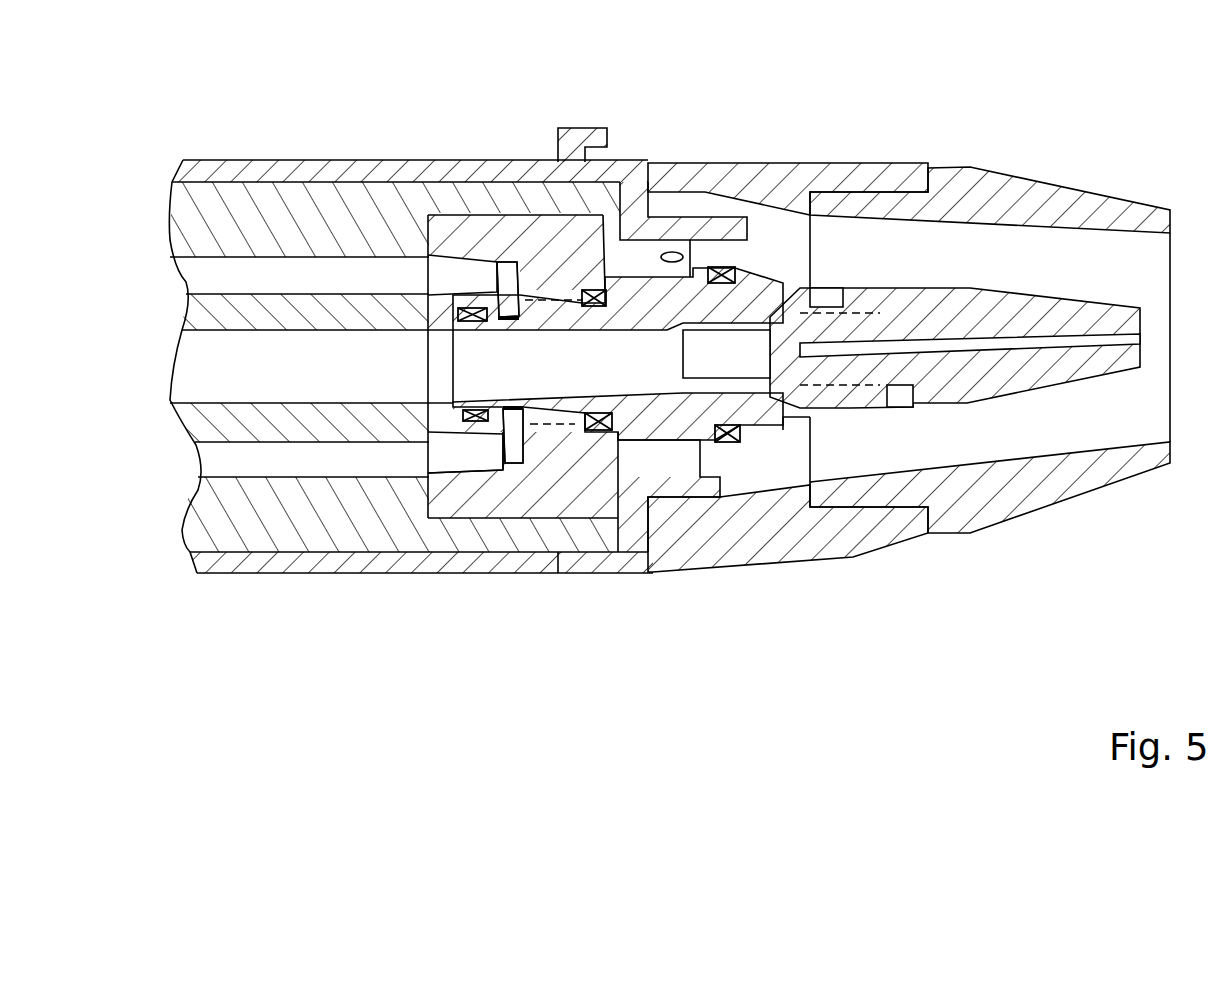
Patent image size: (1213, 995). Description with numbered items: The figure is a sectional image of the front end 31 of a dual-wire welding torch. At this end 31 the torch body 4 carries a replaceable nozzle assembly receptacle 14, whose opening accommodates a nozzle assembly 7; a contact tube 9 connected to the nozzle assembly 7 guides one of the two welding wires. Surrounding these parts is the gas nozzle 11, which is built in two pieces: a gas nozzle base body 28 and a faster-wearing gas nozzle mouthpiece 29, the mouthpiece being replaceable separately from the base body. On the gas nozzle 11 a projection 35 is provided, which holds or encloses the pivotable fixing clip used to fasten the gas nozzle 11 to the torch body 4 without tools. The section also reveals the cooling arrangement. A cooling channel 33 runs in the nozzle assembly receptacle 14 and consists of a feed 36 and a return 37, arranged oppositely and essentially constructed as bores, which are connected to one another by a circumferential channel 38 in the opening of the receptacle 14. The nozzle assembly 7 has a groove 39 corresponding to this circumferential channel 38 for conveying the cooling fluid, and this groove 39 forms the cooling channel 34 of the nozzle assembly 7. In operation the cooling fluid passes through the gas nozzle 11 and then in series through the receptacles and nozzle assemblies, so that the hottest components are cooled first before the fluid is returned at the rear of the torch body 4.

The torch body 4 is at (218, 218).
The nozzle assembly 7 is at (637, 305).
The contact tube 9 is at (1052, 313).
The gas nozzle 11 is at (1010, 568).
The nozzle assembly receptacle 14 is at (455, 242).
The gas nozzle base body 28 is at (733, 548).
The gas nozzle mouthpiece 29 is at (1098, 467).
The end facing the gas nozzle 31 is at (598, 617).
The cooling channel 33 is at (509, 297).
The cooling channel 34 is at (514, 437).
The projection 35 is at (598, 138).
The feed 36 is at (473, 280).
The return 37 is at (467, 453).
The circumferential channel 38 is at (508, 289).
The groove 39 is at (513, 436).